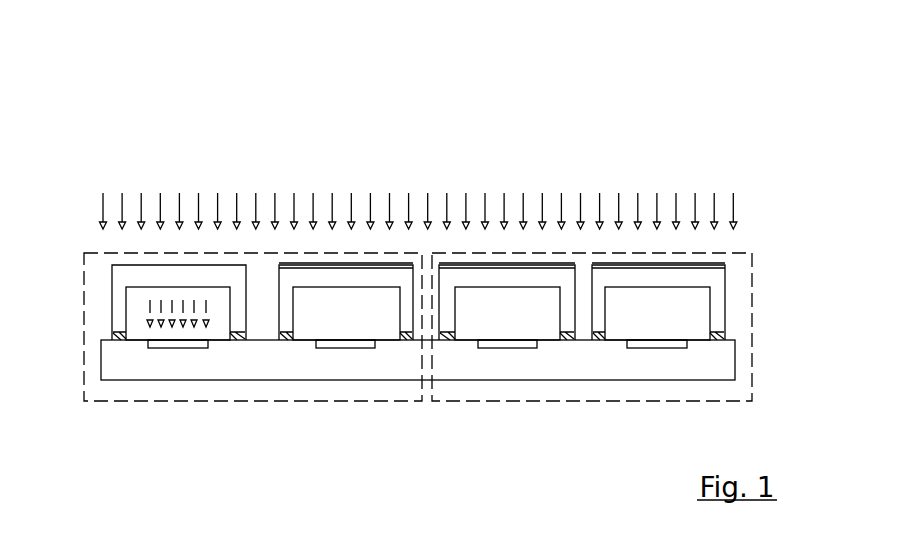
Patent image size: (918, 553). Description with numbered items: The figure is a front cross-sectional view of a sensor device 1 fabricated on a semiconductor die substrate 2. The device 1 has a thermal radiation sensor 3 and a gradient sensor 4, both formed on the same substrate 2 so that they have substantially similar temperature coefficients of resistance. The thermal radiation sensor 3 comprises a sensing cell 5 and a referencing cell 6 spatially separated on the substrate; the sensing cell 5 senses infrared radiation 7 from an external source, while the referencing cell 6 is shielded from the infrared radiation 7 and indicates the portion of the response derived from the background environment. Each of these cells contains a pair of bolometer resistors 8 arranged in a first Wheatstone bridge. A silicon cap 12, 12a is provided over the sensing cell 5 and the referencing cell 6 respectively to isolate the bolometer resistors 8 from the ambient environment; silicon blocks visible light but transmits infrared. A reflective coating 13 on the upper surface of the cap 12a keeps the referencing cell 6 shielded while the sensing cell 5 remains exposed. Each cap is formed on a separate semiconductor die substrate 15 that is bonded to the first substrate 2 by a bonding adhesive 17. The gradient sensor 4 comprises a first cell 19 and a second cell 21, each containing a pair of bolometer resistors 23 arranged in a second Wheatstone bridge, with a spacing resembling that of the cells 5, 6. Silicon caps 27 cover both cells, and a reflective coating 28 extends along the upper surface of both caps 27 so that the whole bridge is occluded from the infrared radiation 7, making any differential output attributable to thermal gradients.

The sensor device 1 is at (600, 76).
The semiconductor die substrate 2 is at (176, 372).
The thermal radiation sensor 3 is at (110, 402).
The gradient sensor 4 is at (548, 402).
The sensing cell 5 is at (100, 310).
The referencing cell 6 is at (270, 294).
The infrared radiation 7 is at (745, 208).
The bolometer resistors 8 is at (152, 348).
The silicon cap 12 is at (118, 283).
The silicon cap 12a is at (327, 272).
The reflective coating 13 is at (290, 265).
The semiconductor die substrate 15 is at (152, 272).
The bonding adhesive 17 is at (115, 333).
The first cell 19 is at (553, 250).
The second cell 21 is at (736, 313).
The bolometer resistors 23 is at (485, 348).
The silicon caps 27 is at (487, 272).
The reflective coating 28 is at (530, 265).